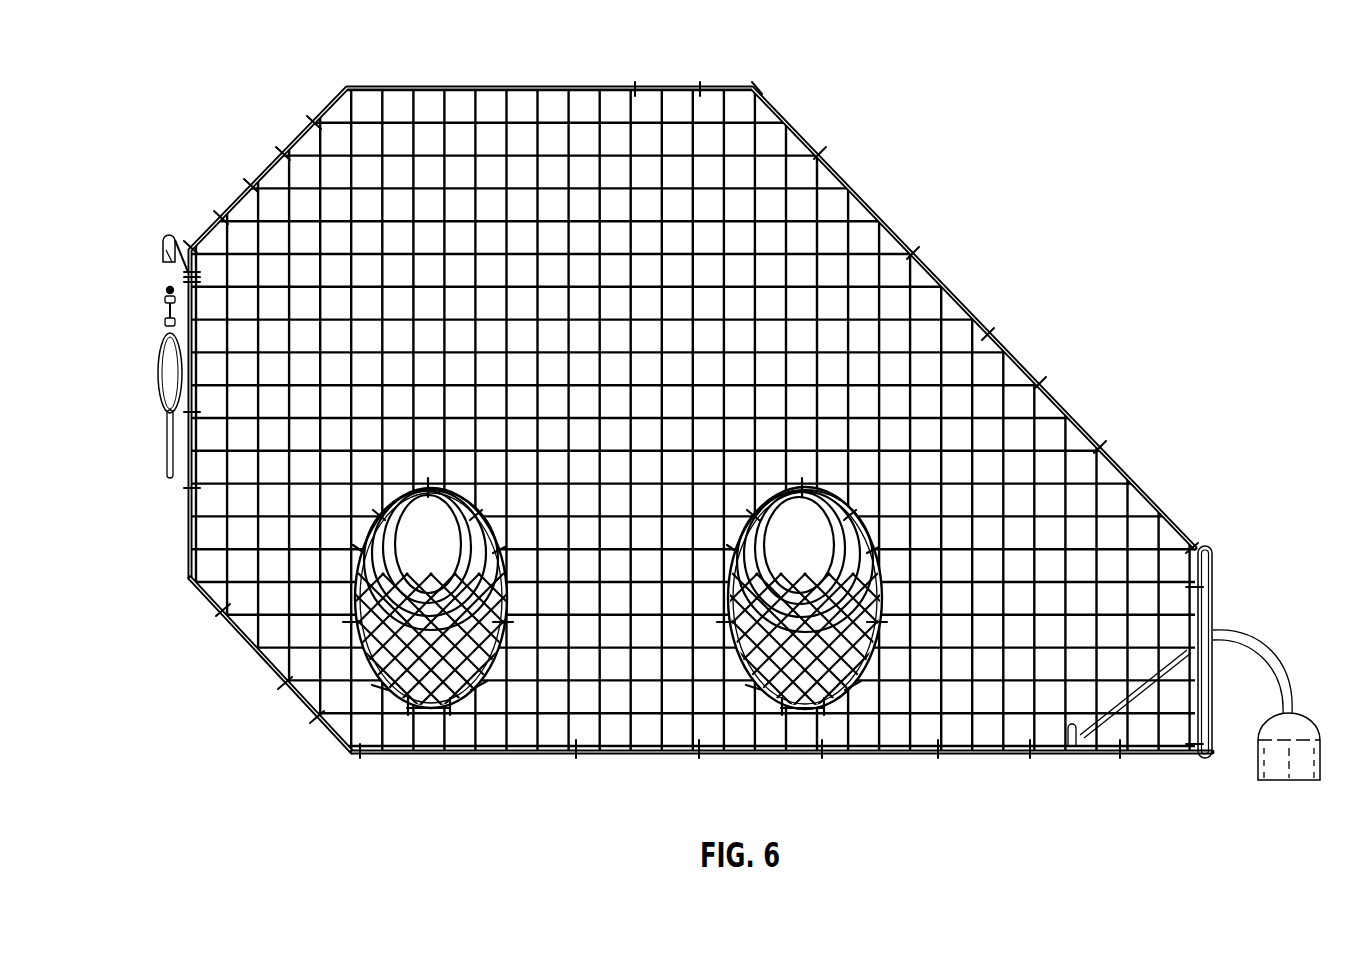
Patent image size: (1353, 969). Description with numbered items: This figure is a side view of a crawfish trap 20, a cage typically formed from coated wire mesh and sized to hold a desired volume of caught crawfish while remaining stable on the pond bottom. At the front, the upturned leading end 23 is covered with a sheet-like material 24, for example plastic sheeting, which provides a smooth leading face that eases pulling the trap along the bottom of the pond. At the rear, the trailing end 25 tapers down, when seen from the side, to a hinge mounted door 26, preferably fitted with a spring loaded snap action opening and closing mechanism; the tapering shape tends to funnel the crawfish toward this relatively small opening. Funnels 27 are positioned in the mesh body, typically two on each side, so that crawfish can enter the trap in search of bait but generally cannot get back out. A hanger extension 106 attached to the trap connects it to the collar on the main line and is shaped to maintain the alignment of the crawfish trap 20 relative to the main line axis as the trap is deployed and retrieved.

The crawfish trap 20 is at (1018, 122).
The leading end 23 is at (263, 668).
The sheet-like material 24 is at (328, 737).
The trailing end 25 is at (1240, 557).
The door 26 is at (1215, 598).
The funnels 27 is at (447, 705).
The hanger extension 106 is at (166, 443).